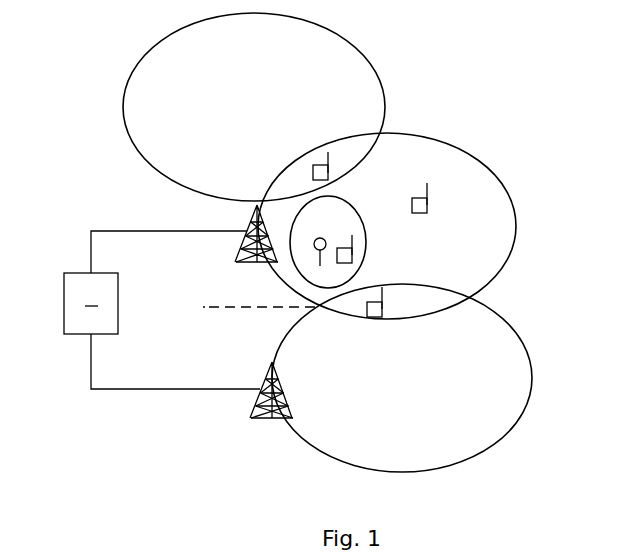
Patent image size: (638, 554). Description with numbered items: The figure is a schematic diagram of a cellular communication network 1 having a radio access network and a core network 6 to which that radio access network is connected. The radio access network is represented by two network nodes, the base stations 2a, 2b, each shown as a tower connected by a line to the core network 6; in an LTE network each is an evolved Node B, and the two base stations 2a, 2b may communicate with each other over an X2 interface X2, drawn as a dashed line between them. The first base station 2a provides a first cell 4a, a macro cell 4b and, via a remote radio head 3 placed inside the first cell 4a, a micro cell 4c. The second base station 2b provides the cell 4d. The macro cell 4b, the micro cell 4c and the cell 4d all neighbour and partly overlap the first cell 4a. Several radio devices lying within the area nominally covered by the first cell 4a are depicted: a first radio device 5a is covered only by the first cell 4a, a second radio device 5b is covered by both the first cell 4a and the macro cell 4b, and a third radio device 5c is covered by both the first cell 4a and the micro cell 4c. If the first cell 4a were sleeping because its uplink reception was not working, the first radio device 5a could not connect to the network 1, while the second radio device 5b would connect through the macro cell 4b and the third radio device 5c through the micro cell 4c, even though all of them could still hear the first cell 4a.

The cellular communication network 1 is at (514, 46).
The first base station 2a is at (247, 249).
The second base station 2b is at (258, 412).
The remote radio head 3 is at (314, 250).
The first cell 4a is at (506, 238).
The macro cell 4b is at (268, 48).
The micro cell 4c is at (343, 229).
The cell 4d is at (413, 461).
The first radio device 5a is at (430, 207).
The second radio device 5b is at (331, 172).
The third radio device 5c is at (354, 256).
The core network 6 is at (162, 310).
The X2 interface X2 is at (241, 309).